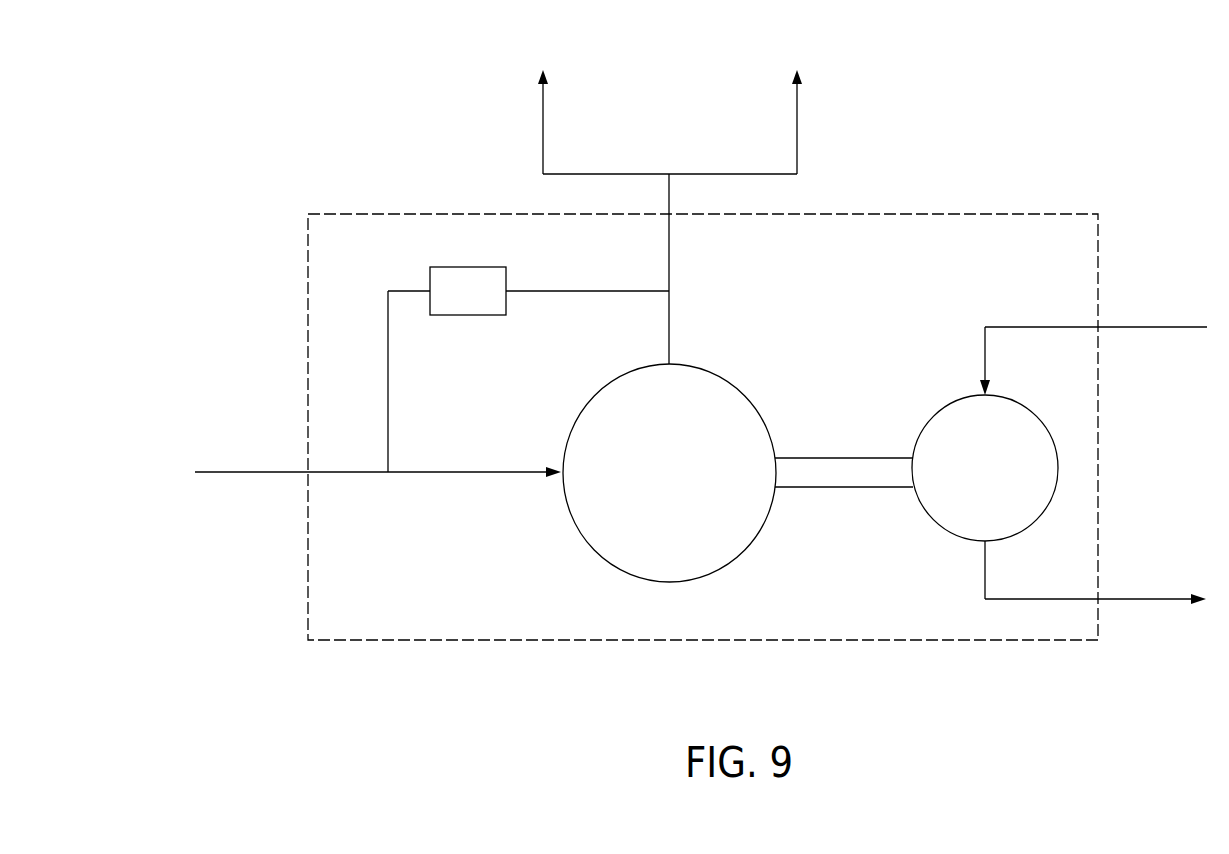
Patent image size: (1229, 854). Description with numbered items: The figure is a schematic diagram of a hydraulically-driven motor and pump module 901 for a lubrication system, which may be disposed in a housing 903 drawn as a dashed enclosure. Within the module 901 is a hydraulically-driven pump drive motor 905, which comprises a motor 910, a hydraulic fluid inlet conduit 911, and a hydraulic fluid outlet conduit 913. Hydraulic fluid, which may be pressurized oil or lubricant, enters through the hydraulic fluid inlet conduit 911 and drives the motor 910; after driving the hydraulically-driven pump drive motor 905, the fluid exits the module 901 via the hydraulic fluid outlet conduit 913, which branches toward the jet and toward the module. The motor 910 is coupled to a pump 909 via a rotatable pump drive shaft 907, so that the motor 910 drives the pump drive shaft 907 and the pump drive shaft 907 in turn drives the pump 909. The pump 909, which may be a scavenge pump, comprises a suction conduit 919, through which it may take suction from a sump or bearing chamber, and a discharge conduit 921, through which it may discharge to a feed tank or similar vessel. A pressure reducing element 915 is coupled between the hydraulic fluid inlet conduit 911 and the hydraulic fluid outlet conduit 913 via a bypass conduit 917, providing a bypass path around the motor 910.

The hydraulically-driven motor and pump module 901 is at (968, 83).
The housing 903 is at (1037, 214).
The hydraulically-driven pump drive motor 905 is at (624, 484).
The rotatable pump drive shaft 907 is at (850, 475).
The pump 909 is at (985, 468).
The motor 910 is at (548, 570).
The hydraulic fluid inlet conduit 911 is at (347, 473).
The hydraulic fluid outlet conduit 913 is at (669, 238).
The pressure reducing element 915 is at (549, 291).
The bypass conduit 917 is at (388, 381).
The suction conduit 919 is at (1160, 327).
The discharge conduit 921 is at (1145, 599).